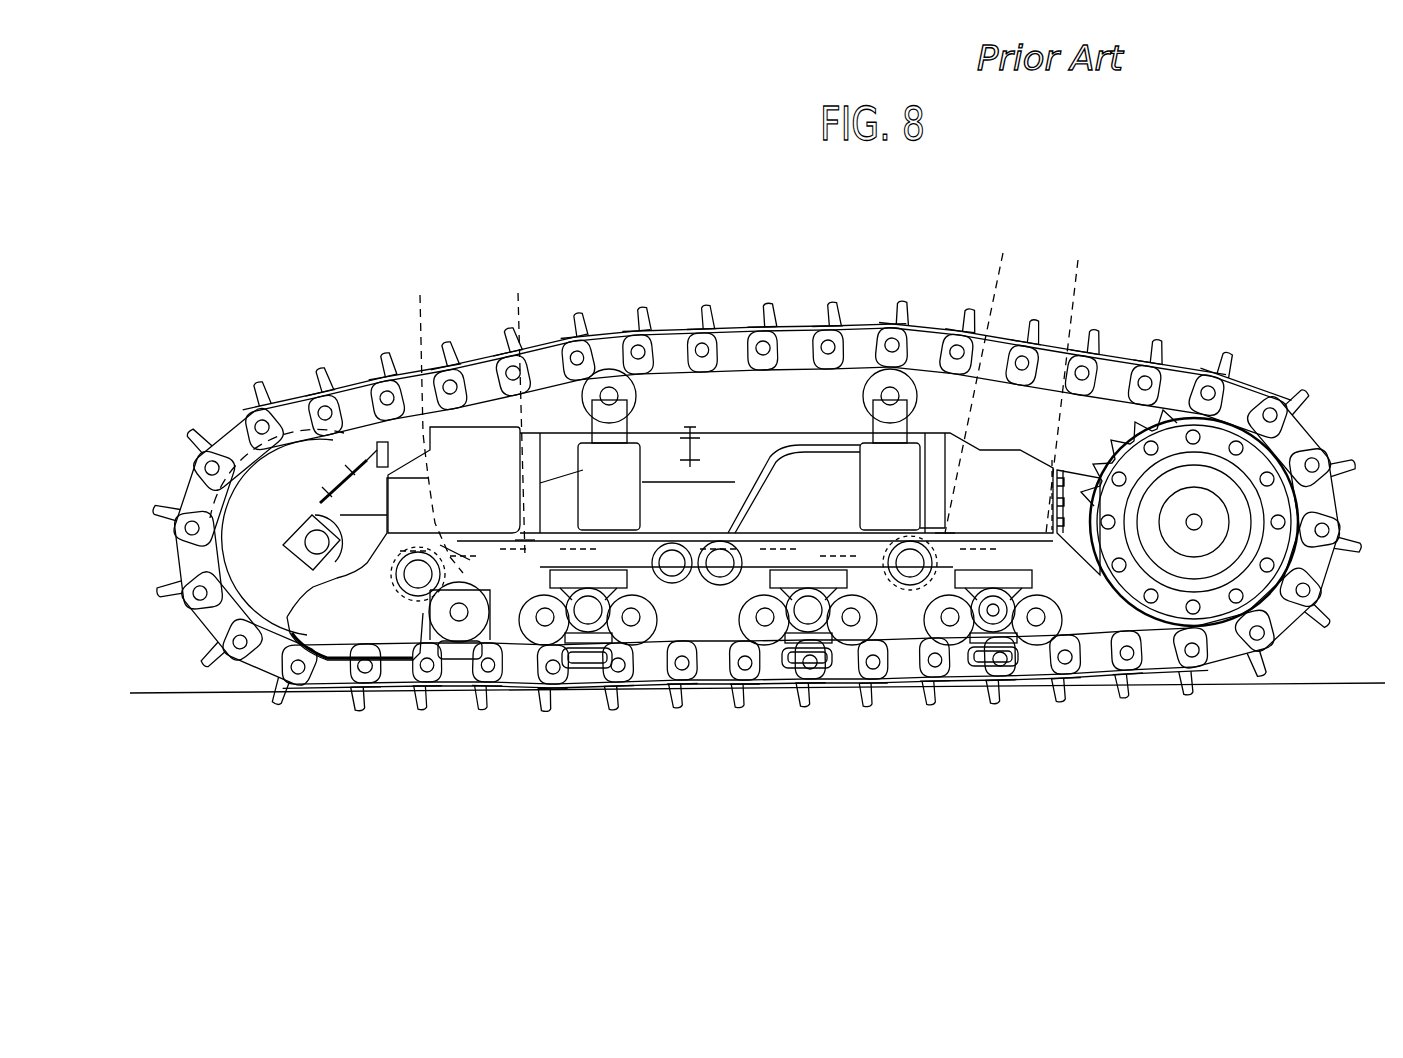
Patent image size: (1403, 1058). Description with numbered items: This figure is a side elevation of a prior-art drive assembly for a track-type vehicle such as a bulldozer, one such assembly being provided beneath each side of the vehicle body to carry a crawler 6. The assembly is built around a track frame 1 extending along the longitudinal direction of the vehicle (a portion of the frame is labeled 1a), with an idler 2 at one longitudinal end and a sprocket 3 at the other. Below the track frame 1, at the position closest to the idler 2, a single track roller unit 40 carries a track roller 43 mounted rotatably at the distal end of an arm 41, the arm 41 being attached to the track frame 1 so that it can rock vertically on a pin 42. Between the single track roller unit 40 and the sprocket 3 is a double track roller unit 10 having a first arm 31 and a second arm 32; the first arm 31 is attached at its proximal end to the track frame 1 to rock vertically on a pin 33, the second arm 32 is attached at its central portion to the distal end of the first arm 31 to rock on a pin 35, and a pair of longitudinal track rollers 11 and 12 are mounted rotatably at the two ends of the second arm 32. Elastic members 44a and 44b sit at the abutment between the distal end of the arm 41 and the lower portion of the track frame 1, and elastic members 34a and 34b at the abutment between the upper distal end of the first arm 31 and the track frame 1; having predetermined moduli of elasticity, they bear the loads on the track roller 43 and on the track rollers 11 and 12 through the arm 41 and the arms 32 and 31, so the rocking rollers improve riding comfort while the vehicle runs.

The track frame 1 is at (732, 452).
The idler mounting guide 1a is at (368, 465).
The idler 2 is at (253, 493).
The sprocket 3 is at (1170, 433).
The crawler 6 is at (608, 375).
The double track roller unit 10 is at (858, 731).
The track roller 11 is at (940, 625).
The track roller 12 is at (1052, 633).
The first arm 31 is at (993, 612).
The second arm 32 is at (1052, 701).
The pin 33 is at (907, 585).
The elastic member 34a is at (982, 370).
The elastic member 34b is at (1089, 374).
The pin 35 is at (1000, 618).
The single track roller unit 40 is at (404, 705).
The arm 41 is at (492, 583).
The pin 42 is at (418, 574).
The track roller 43 is at (465, 600).
The elastic member 44a is at (427, 410).
The elastic member 44b is at (517, 399).